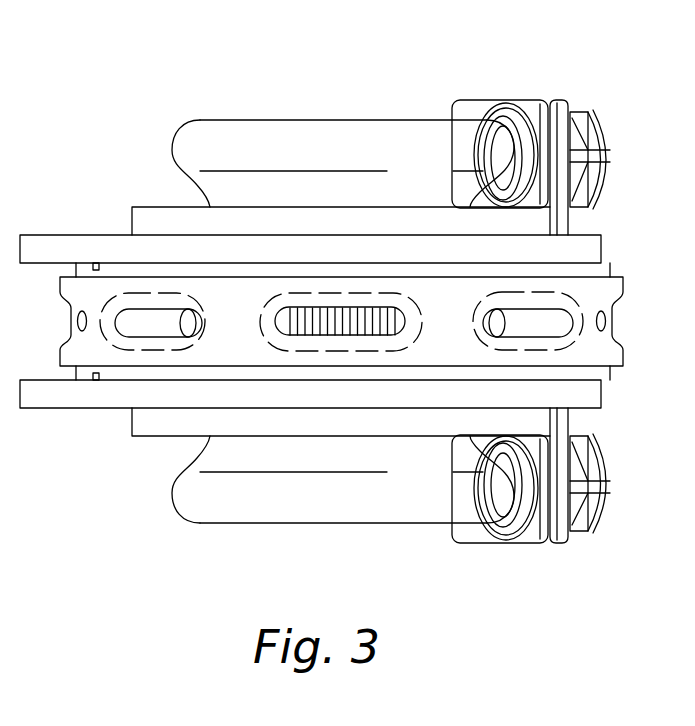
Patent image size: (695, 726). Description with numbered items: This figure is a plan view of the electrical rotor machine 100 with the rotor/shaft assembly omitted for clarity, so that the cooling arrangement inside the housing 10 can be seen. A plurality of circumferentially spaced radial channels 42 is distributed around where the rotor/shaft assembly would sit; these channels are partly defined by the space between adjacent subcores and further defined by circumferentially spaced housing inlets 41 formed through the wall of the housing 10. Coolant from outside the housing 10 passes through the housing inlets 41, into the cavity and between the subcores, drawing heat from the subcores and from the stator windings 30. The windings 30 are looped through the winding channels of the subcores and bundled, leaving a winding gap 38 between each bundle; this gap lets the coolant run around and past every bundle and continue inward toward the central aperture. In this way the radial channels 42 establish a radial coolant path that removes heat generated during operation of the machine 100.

The machine 100 is at (70, 118).
The housing 10 is at (130, 433).
The stator windings 30 is at (413, 524).
The winding gap 38 is at (350, 333).
The housing inlets 41 is at (365, 324).
The radial channels 42 is at (328, 326).